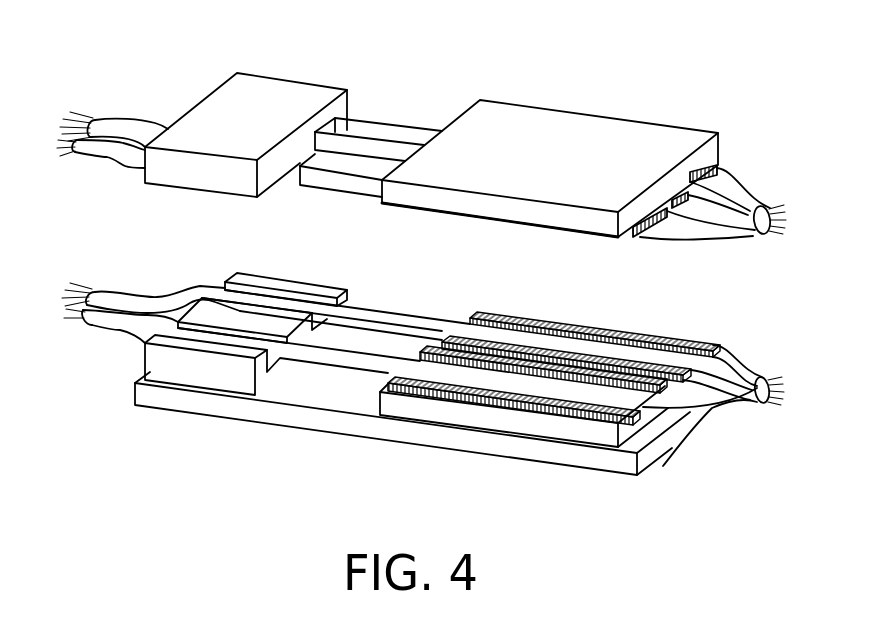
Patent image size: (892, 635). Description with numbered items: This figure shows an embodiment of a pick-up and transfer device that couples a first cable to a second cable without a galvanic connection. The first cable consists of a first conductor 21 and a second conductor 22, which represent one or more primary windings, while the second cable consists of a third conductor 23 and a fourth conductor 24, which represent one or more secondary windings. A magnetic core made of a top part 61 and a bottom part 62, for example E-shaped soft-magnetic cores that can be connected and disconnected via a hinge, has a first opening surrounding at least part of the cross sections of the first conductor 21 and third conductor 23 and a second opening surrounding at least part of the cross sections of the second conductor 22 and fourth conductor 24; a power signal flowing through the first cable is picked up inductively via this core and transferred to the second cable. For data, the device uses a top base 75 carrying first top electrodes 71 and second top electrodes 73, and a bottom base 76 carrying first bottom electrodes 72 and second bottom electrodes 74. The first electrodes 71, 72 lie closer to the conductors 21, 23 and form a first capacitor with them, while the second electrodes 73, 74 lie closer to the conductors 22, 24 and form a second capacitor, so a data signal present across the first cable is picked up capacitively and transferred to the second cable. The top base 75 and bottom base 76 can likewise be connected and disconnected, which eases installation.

The first conductor 21 is at (113, 120).
The second conductor 22 is at (93, 158).
The third conductor 23 is at (121, 302).
The fourth conductor 24 is at (104, 322).
The top part of magnetic core 61 is at (273, 100).
The bottom part of magnetic core 62 is at (200, 373).
The first top electrodes 71 is at (718, 172).
The first bottom electrodes 72 is at (713, 350).
The second top electrodes 73 is at (633, 237).
The second bottom electrodes 74 is at (643, 416).
The top base 75 is at (582, 137).
The bottom base 76 is at (488, 415).